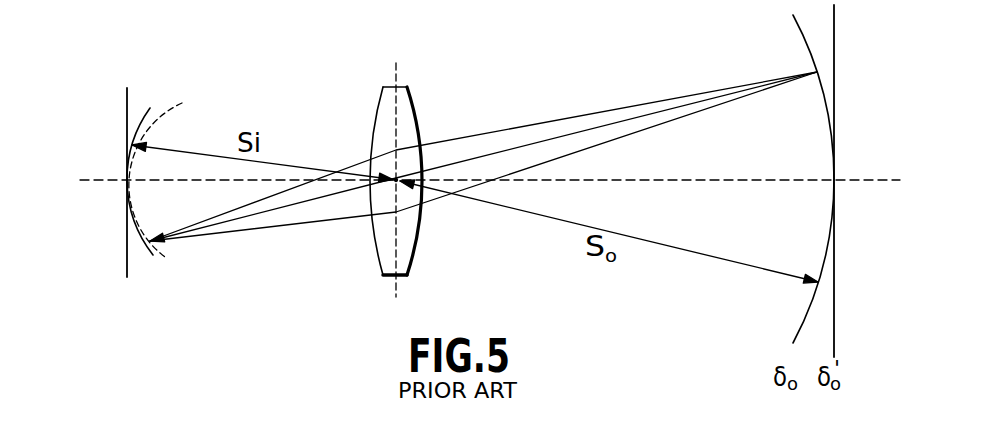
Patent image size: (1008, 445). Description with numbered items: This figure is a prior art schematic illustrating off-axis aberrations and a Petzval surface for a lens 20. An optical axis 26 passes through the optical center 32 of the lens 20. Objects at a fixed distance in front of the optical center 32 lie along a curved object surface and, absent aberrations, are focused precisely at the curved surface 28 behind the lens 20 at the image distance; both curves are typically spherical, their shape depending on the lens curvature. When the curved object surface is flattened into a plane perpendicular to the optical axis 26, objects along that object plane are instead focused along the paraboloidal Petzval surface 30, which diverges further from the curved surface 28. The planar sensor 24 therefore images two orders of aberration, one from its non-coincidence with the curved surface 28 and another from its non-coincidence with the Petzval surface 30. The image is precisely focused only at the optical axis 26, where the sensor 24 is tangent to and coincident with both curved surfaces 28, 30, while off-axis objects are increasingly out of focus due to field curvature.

The lens 20 is at (406, 108).
The planar sensor 24 is at (126, 100).
The optical axis 26 is at (91, 180).
The curved surface 28 is at (143, 118).
The Petzval surface 30 is at (162, 248).
The optical center 32 is at (390, 168).